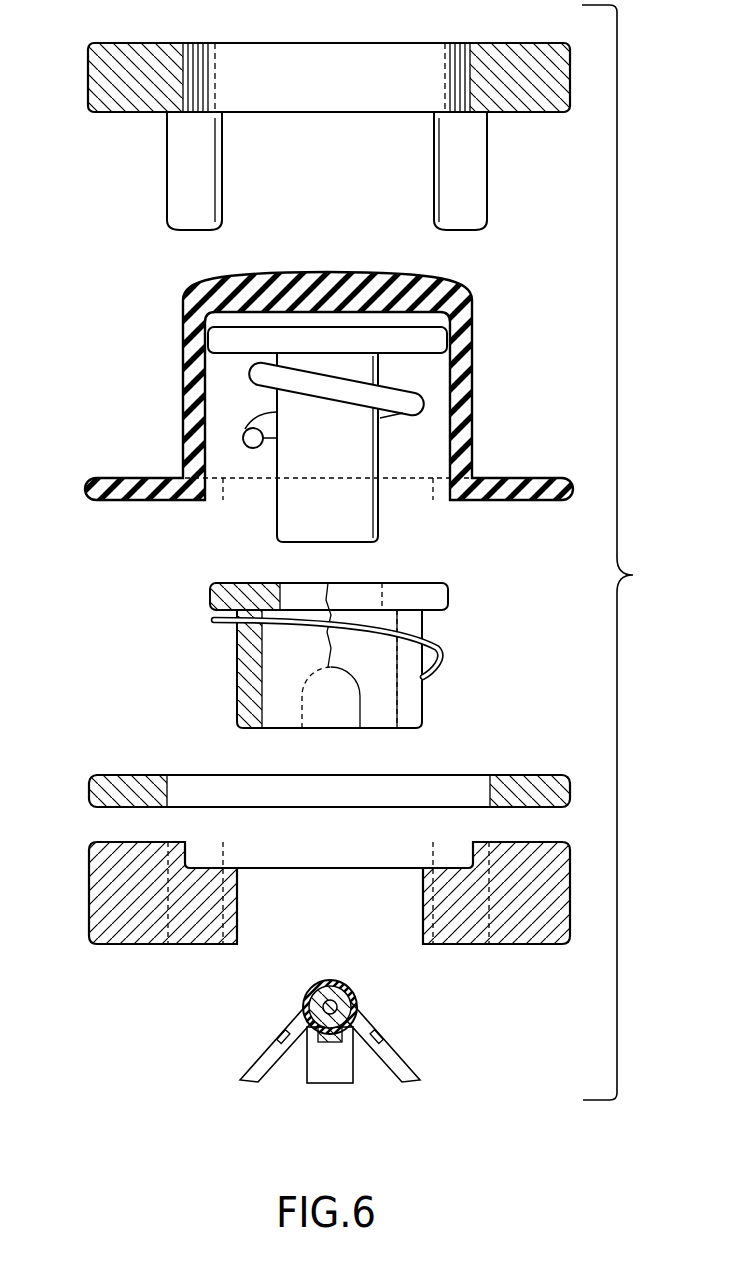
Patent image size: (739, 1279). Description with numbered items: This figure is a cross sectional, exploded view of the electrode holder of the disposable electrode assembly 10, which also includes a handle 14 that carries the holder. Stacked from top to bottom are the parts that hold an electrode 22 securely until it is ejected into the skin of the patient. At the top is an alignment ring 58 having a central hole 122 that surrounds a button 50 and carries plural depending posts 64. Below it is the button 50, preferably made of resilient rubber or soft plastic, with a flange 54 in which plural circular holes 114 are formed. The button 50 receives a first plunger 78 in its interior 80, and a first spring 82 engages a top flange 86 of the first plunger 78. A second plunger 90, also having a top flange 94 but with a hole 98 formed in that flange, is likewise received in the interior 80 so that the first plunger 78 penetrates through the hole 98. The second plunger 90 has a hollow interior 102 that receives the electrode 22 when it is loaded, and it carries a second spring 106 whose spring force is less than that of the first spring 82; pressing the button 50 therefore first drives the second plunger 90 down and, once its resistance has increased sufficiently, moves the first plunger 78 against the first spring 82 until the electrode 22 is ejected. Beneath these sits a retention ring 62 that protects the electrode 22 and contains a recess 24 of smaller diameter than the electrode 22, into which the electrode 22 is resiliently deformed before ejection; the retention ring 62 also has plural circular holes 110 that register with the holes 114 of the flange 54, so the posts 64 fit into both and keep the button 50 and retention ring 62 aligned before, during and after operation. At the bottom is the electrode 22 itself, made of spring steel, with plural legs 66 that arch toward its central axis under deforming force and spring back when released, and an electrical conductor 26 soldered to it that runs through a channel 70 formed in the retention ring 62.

The disposable electrode assembly 10 is at (633, 575).
The handle 14 is at (135, 773).
The electrode 22 is at (302, 1044).
The recess 24 is at (272, 915).
The electrical conductor 26 is at (345, 984).
The button 50 is at (329, 407).
The flange 54 is at (120, 478).
The alignment ring 58 is at (305, 119).
The retention ring 62 is at (326, 923).
The depending posts 64 is at (200, 145).
The legs 66 is at (275, 1070).
The channel 70 is at (335, 705).
The first plunger 78 is at (315, 496).
The interior 80 is at (394, 466).
The first spring 82 is at (417, 402).
The top flange 86 is at (418, 340).
The second plunger 90 is at (348, 658).
The top flange 94 is at (426, 593).
The hole 98 is at (297, 592).
The hollow interior 102 is at (285, 708).
The second spring 106 is at (435, 664).
The circular holes 110 is at (205, 932).
The circular holes 114 is at (220, 500).
The central hole 122 is at (250, 77).